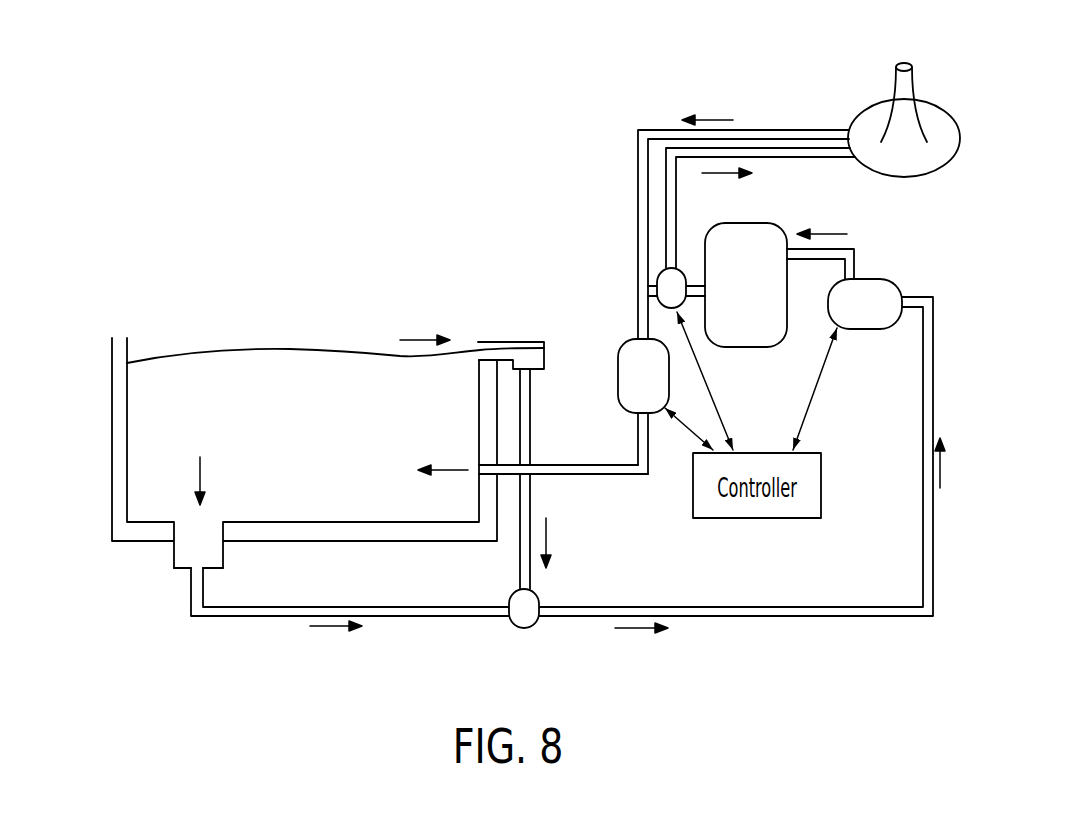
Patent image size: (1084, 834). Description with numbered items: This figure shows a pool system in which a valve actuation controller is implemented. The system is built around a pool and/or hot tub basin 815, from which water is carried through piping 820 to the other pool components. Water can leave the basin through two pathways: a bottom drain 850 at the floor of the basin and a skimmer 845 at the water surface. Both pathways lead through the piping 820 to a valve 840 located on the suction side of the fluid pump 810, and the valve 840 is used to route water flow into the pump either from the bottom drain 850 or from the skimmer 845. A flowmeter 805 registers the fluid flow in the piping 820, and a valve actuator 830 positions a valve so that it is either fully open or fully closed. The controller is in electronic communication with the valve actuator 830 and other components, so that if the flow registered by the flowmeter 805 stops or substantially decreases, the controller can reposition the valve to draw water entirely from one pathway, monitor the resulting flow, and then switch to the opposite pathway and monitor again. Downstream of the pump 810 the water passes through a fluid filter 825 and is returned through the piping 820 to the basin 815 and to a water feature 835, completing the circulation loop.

The flowmeter 805 is at (619, 350).
The fluid pump 810 is at (877, 279).
The pool and/or hot tub basin 815 is at (112, 447).
The piping 820 is at (224, 616).
The fluid filter 825 is at (781, 227).
The valve actuator 830 is at (662, 272).
The water feature 835 is at (849, 122).
The valve 840 is at (524, 629).
The skimmer 845 is at (503, 341).
The bottom drain 850 is at (183, 570).